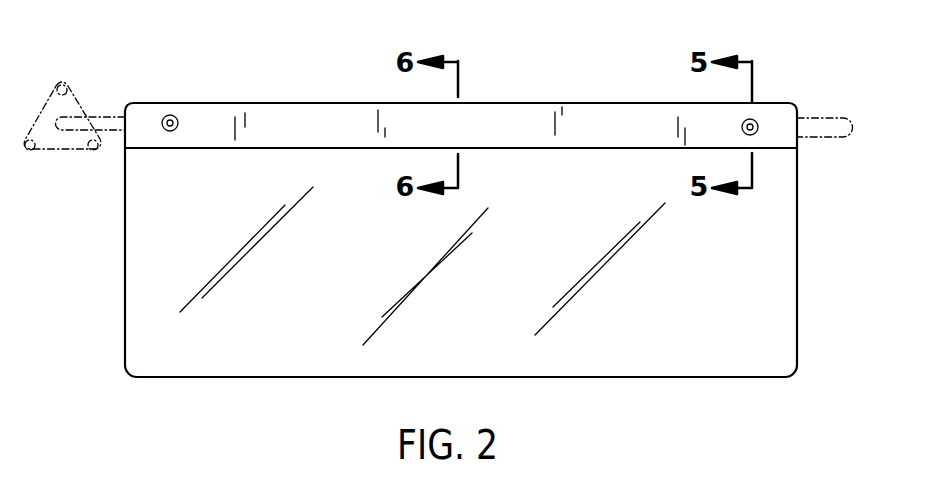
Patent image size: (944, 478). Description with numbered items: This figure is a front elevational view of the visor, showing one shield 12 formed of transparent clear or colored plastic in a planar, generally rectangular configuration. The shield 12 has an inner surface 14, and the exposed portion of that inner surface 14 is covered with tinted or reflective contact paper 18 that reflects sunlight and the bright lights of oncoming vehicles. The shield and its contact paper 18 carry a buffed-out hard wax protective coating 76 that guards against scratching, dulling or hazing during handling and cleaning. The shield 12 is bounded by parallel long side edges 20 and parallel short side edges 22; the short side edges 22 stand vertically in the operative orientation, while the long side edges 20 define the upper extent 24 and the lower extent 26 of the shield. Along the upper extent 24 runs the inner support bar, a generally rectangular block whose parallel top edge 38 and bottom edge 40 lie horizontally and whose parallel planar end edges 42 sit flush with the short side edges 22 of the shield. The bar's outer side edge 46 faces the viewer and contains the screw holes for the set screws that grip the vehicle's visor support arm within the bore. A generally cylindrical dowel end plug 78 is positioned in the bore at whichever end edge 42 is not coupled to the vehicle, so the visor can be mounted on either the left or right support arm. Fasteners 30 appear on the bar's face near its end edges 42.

The shield 12 is at (797, 302).
The inner surface 14 is at (773, 362).
The contact paper 18 is at (328, 332).
The long side edges 20 is at (483, 103).
The short side edges 22 is at (125, 290).
The upper extent 24 is at (798, 105).
The lower extent 26 is at (797, 345).
The fastener 30 is at (178, 123).
The top edge 38 is at (583, 103).
The bottom edge 40 is at (655, 150).
The end edges 42 is at (121, 111).
The outer side edge 46 is at (563, 137).
The hard wax protective coating 76 is at (188, 348).
The dowel end plug 78 is at (850, 127).